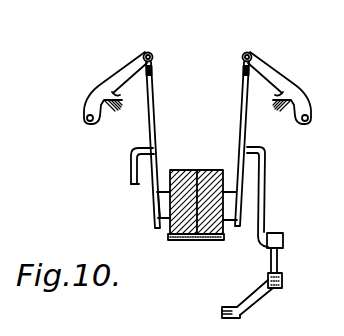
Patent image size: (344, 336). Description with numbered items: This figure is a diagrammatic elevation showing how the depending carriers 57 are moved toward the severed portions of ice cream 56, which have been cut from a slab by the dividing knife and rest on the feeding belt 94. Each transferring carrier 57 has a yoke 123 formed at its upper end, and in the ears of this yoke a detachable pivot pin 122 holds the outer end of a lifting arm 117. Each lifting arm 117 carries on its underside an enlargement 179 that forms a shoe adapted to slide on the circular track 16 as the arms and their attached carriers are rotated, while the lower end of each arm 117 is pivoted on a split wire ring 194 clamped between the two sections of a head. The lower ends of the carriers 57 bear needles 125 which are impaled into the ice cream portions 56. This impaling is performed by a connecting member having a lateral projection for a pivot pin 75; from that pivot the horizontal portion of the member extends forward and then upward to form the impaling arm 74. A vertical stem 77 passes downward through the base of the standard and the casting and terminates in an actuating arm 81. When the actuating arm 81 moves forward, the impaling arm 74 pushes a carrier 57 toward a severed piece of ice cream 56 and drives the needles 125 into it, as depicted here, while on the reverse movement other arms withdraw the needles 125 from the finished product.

The circular track 16 is at (111, 107).
The ice cream portion 56 is at (178, 172).
The transferring carrier 57 is at (157, 113).
The impaling arm 74 is at (130, 184).
The pivot pin 75 is at (284, 241).
The vertical stem 77 is at (279, 264).
The actuating arm 81 is at (250, 296).
The feeding belt 94 is at (186, 241).
The lifting arm 117 is at (124, 73).
The pivot pin 122 is at (149, 52).
The yoke 123 is at (154, 72).
The needle 125 is at (160, 205).
The enlargement 179 is at (117, 96).
The split wire ring 194 is at (90, 121).